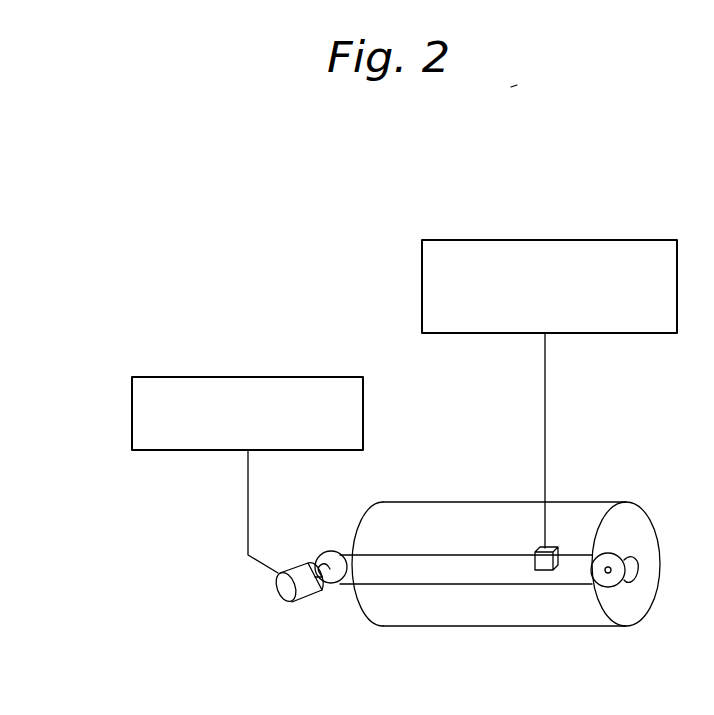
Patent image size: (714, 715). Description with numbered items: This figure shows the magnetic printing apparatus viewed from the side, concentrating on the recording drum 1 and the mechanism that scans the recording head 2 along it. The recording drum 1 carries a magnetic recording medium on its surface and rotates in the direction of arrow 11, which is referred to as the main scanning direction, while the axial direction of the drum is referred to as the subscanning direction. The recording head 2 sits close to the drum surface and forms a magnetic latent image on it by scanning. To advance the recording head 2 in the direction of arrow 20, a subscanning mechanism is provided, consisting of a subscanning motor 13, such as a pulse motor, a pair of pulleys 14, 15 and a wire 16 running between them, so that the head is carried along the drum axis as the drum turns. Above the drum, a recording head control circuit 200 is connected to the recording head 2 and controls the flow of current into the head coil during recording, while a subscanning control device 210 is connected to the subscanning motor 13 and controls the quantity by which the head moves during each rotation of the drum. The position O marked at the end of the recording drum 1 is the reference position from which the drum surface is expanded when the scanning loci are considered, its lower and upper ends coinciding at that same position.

The recording drum 1 is at (430, 626).
The recording head 2 is at (549, 547).
The arrow 11 is at (604, 545).
The subscanning motor 13 is at (290, 605).
The pulley 14 is at (325, 552).
The pulley 15 is at (609, 587).
The wire 16 is at (530, 584).
The arrow 20 is at (470, 537).
The recording head control circuit 200 is at (658, 240).
The subscanning control device 210 is at (161, 377).
The position 0 O is at (661, 568).